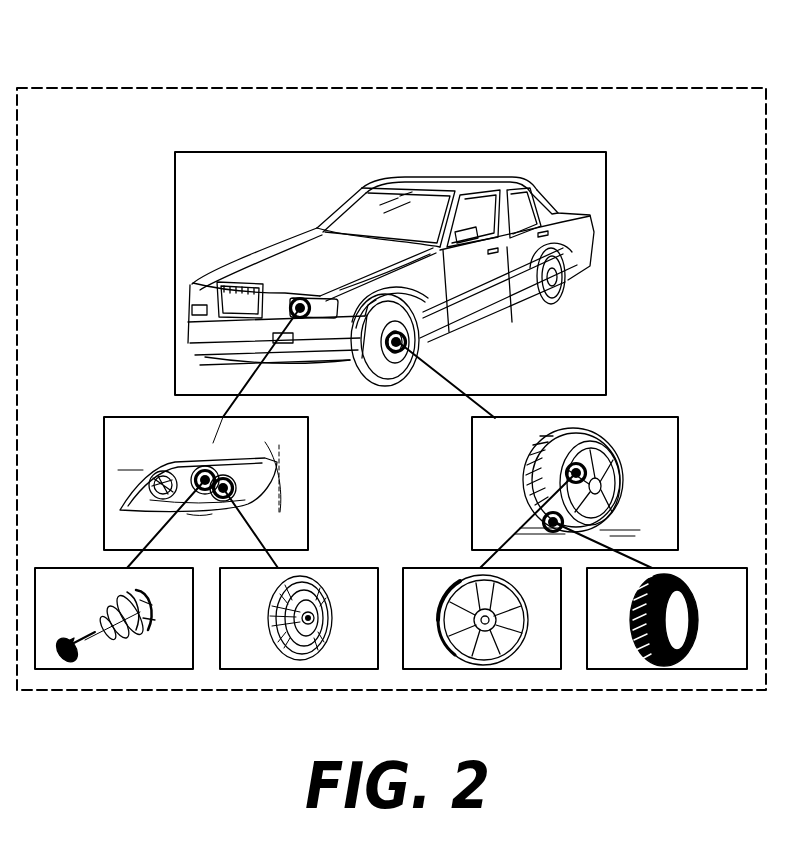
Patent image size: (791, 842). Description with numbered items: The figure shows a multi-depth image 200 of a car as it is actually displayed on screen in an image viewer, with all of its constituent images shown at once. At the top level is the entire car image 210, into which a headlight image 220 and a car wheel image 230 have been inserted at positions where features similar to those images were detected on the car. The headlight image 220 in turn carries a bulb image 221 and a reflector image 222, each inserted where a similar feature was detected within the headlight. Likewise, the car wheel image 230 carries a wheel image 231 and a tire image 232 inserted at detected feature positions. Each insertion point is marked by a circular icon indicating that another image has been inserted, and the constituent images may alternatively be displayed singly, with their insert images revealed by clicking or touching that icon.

The multi-depth image 200 is at (128, 52).
The entire car image 210 is at (562, 152).
The headlight image 220 is at (145, 417).
The bulb image 221 is at (70, 568).
The reflector image 222 is at (342, 568).
The car wheel image 230 is at (642, 417).
The wheel image 231 is at (440, 568).
The tire image 232 is at (705, 568).